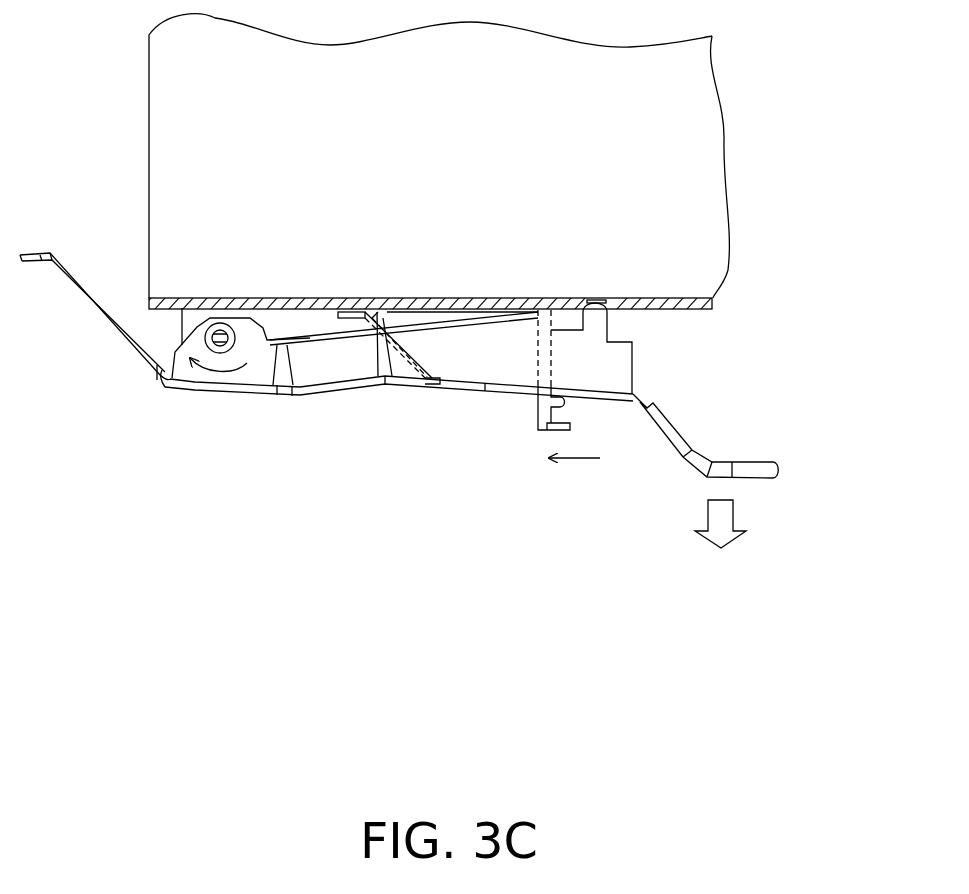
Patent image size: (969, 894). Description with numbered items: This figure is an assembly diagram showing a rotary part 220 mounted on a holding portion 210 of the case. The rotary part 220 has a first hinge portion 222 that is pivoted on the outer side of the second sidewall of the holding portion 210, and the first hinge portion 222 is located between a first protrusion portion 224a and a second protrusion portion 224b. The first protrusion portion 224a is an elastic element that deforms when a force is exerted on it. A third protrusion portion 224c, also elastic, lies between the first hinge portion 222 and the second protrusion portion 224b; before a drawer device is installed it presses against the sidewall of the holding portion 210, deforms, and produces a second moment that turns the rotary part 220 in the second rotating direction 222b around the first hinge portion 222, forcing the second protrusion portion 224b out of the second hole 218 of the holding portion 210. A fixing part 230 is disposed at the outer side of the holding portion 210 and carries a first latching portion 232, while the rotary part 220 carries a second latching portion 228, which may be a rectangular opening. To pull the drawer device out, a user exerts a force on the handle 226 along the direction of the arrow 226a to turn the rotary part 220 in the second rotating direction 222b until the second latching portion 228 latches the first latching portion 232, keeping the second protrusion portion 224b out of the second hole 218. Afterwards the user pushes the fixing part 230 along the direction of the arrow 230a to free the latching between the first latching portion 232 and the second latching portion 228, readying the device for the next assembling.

The holding portion 210 is at (690, 308).
The second hole 218 is at (596, 296).
The rotary part 220 is at (283, 424).
The first hinge portion 222 is at (222, 355).
The second rotating direction 222b is at (205, 374).
The first protrusion portion 224a is at (100, 315).
The second protrusion portion 224b is at (593, 323).
The third protrusion portion 224c is at (347, 320).
The handle 226 is at (768, 462).
The arrow 226a is at (730, 543).
The second latching portion 228 is at (506, 404).
The fixing part 230 is at (540, 432).
The arrow 230a is at (578, 462).
The first latching portion 232 is at (566, 413).